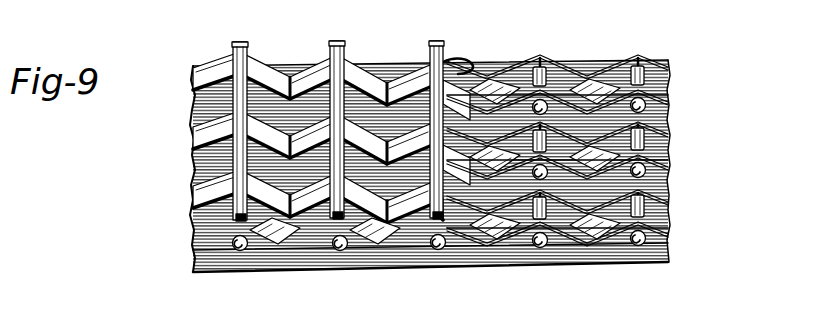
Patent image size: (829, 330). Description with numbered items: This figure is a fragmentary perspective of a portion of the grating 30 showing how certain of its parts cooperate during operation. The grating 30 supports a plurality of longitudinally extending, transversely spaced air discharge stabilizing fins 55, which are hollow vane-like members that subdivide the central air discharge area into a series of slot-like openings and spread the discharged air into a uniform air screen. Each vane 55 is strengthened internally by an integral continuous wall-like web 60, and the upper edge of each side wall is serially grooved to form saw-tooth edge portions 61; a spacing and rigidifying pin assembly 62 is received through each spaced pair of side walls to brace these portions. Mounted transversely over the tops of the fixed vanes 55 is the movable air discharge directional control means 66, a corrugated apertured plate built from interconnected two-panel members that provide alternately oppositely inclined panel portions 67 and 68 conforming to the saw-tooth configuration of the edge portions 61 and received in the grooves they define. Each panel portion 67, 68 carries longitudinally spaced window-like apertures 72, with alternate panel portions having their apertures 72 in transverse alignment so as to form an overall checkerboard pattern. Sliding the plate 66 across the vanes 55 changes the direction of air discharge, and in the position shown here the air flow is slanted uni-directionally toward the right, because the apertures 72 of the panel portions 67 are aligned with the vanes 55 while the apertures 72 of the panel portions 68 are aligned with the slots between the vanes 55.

The grating 30 is at (660, 54).
The air discharge stabilizing fins 55 is at (670, 107).
The web 60 is at (670, 92).
The saw-tooth edge portions 61 is at (612, 62).
The spacing and rigidifying pin assembly 62 is at (670, 145).
The movable air discharge directional control means 66 is at (195, 62).
The panel portions 67 is at (307, 62).
The panel portions 68 is at (455, 98).
The apertures 72 is at (199, 161).